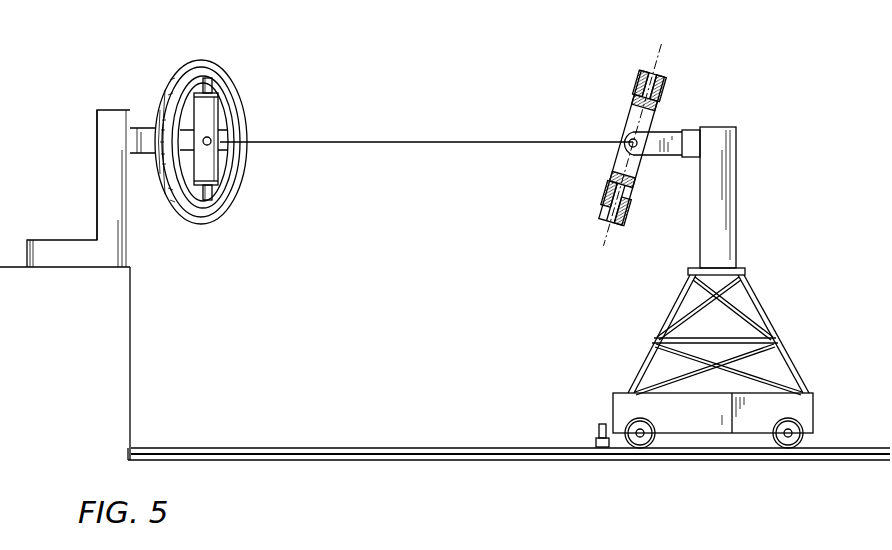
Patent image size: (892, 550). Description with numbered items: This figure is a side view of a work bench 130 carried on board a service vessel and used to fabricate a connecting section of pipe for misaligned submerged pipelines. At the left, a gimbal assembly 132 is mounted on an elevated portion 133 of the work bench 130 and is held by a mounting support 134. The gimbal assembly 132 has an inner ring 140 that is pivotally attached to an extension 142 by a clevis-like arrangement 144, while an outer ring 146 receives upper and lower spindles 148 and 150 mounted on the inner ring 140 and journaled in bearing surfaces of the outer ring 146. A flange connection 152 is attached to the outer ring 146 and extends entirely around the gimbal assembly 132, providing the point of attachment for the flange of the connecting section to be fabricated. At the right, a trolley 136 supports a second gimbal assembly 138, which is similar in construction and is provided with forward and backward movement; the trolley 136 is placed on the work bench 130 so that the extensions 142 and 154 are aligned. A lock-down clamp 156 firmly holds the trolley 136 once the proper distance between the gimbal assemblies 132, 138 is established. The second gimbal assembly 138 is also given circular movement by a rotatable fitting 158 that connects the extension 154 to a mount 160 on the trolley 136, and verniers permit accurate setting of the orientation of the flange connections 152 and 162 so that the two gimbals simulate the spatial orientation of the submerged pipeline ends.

The work bench 130 is at (316, 447).
The gimbal assembly 132 is at (129, 71).
The elevated portion 133 is at (130, 348).
The mounting support 134 is at (107, 198).
The trolley 136 is at (660, 333).
The second gimbal assembly 138 is at (695, 99).
The inner ring 140 is at (210, 117).
The extension 142 is at (140, 156).
The clevis-like arrangement 144 is at (210, 148).
The outer ring 146 is at (233, 77).
The upper spindle 148 is at (213, 81).
The lower spindle 150 is at (213, 200).
The flange connection 152 is at (198, 60).
The extension 154 is at (670, 158).
The lock-down clamp 156 is at (599, 424).
The rotatable fitting 158 is at (692, 145).
The mount 160 is at (736, 206).
The flange connection 162 is at (661, 72).